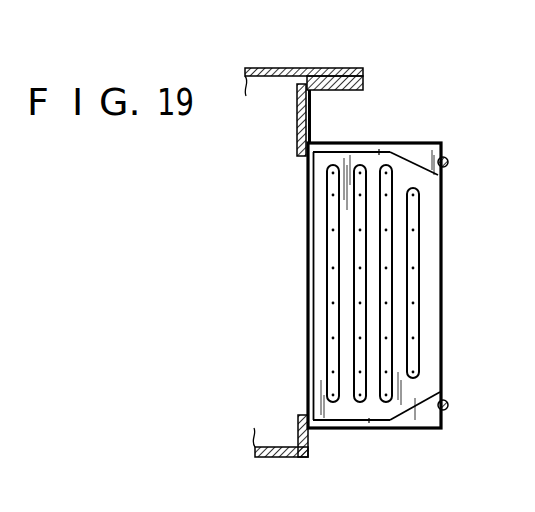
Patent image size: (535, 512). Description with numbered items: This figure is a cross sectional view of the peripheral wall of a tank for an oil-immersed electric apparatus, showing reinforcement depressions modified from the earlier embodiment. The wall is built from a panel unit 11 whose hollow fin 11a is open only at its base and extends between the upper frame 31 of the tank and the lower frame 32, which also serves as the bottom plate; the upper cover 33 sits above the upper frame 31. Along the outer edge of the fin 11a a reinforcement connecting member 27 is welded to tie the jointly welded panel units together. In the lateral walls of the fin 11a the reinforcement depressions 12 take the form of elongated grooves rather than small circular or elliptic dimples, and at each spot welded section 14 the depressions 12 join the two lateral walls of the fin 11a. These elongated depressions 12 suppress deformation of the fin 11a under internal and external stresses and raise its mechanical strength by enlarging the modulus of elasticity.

The panel unit 11 is at (298, 309).
The hollow fin 11a is at (425, 207).
The reinforcement depressions 12 is at (330, 247).
The spot welded section 14 is at (422, 152).
The reinforcement connecting member 27 is at (449, 163).
The upper frame 31 is at (307, 125).
The lower frame 32 is at (305, 457).
The upper cover 33 is at (355, 67).